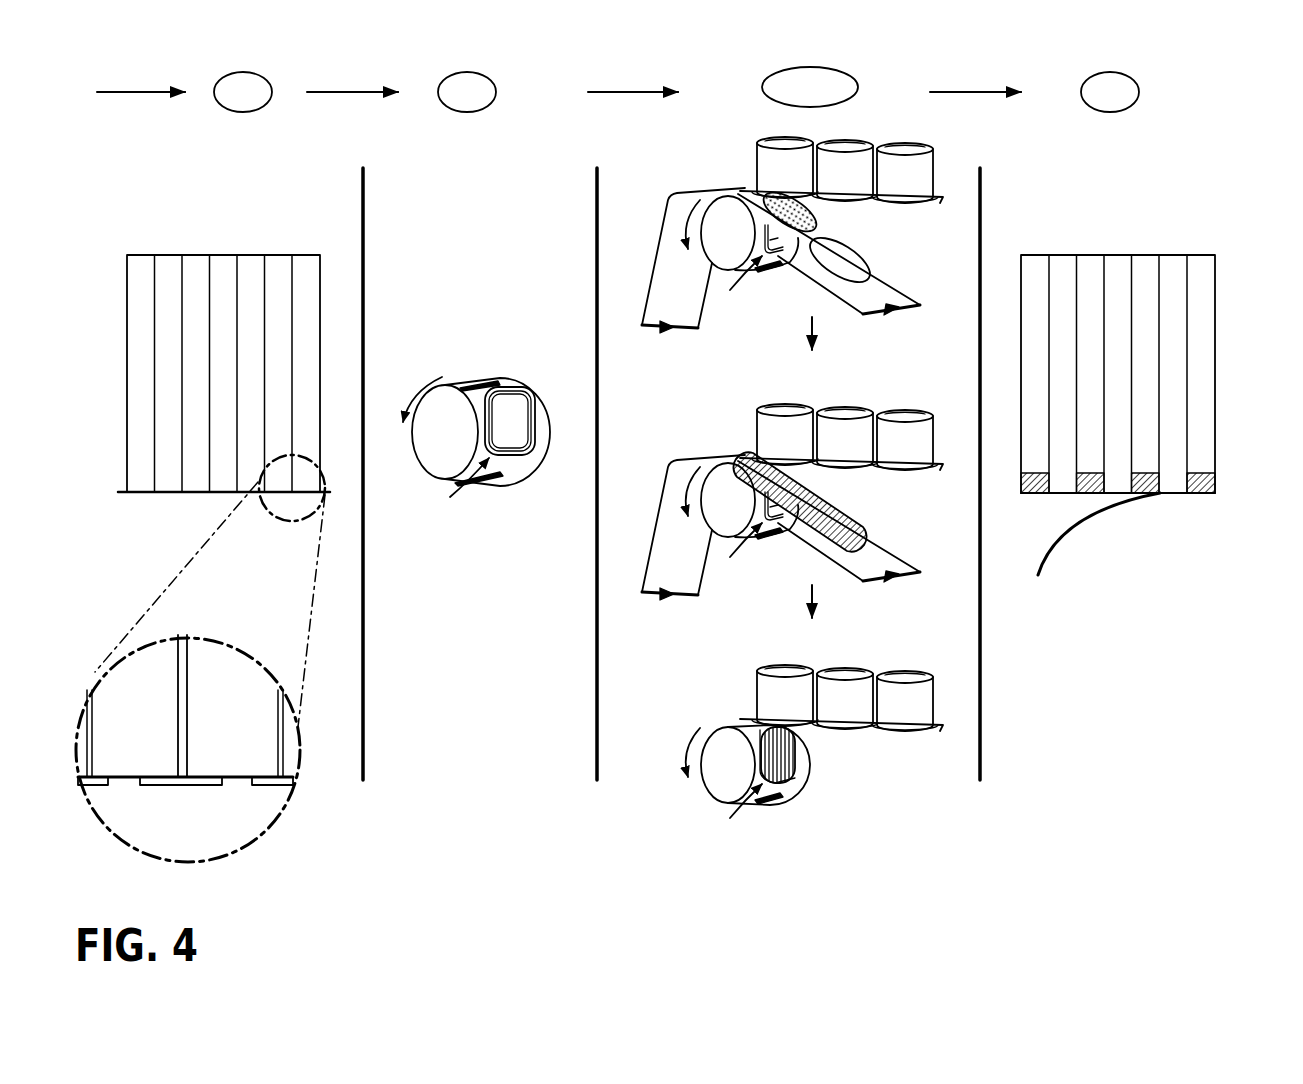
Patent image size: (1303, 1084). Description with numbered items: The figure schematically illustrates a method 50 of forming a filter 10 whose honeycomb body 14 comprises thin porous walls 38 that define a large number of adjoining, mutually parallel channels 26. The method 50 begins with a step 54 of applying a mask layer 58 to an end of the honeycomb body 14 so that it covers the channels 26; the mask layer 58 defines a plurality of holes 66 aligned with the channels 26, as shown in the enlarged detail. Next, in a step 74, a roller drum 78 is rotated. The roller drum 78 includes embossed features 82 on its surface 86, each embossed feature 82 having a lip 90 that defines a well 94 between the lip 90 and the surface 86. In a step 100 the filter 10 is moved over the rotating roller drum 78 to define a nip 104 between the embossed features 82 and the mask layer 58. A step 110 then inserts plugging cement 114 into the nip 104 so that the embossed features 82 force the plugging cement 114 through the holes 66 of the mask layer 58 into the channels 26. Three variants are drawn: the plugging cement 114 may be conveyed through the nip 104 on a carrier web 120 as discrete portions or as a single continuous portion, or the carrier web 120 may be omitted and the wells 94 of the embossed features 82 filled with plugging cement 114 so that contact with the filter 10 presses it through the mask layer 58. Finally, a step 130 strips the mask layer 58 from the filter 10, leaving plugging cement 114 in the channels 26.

The filter 10 is at (666, 441).
The honeycomb body 14 is at (666, 457).
The channels 26 is at (168, 280).
The walls 38 is at (240, 280).
The method 50 is at (176, 64).
The step of applying a mask layer 54 is at (243, 92).
The mask layer 58 is at (120, 490).
The holes 66 is at (122, 784).
The step of rotating a roller drum 74 is at (467, 92).
The roller drum 78 is at (452, 380).
The embossed features 82 is at (528, 385).
The surface 86 is at (505, 400).
The lip 90 is at (535, 406).
The well 94 is at (516, 433).
The step of moving the filter over the roller drum 100 is at (734, 405).
The nip 104 is at (746, 189).
The step of inserting plugging cement 110 is at (622, 741).
The plugging cement 114 is at (845, 258).
The carrier web 120 is at (888, 290).
The step of stripping the mask layer 130 is at (1110, 92).